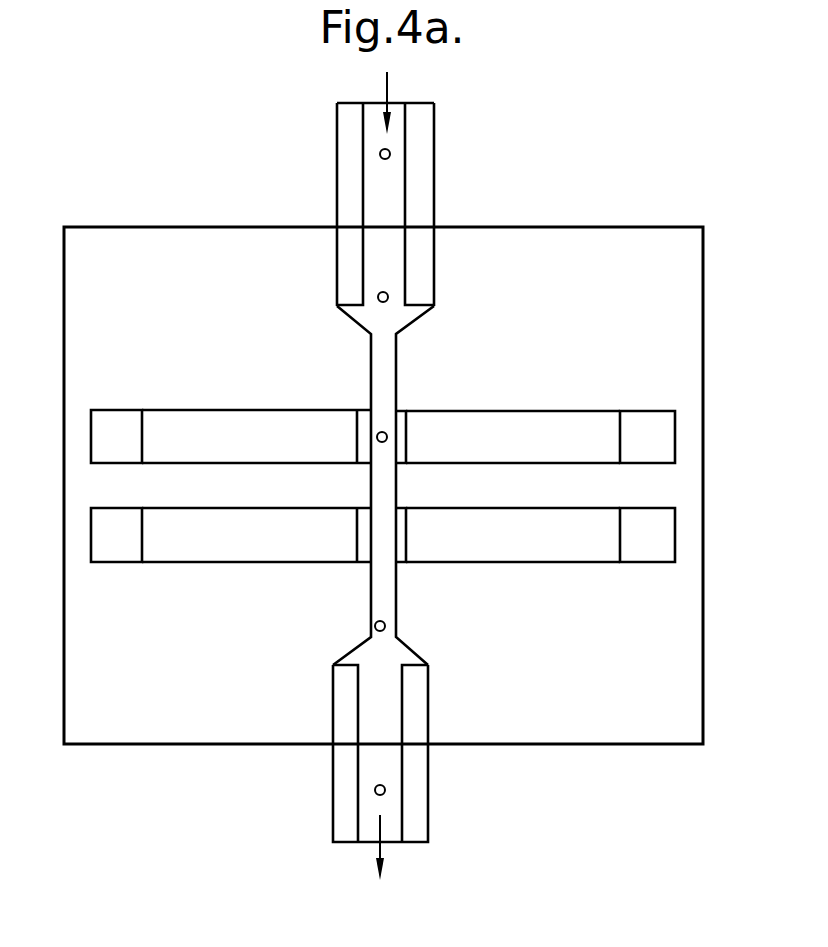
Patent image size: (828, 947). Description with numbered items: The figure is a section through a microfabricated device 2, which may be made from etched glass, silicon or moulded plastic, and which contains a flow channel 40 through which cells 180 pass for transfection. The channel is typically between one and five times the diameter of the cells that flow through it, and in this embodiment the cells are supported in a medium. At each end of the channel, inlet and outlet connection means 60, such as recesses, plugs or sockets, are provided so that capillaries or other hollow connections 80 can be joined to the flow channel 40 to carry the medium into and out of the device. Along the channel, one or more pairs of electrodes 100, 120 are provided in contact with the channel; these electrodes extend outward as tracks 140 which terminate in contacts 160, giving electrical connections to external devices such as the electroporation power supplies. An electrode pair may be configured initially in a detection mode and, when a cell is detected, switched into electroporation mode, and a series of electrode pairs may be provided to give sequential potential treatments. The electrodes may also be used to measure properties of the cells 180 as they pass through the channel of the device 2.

The microfabricated device 2 is at (647, 252).
The flow channel 40 is at (383, 373).
The inlet and outlet connection means 60 is at (335, 261).
The capillaries or other hollow connections 80 is at (435, 176).
The electrode 100 is at (365, 442).
The electrode 120 is at (362, 534).
The tracks 140 is at (577, 428).
The contacts 160 is at (652, 433).
The cells 180 is at (391, 150).